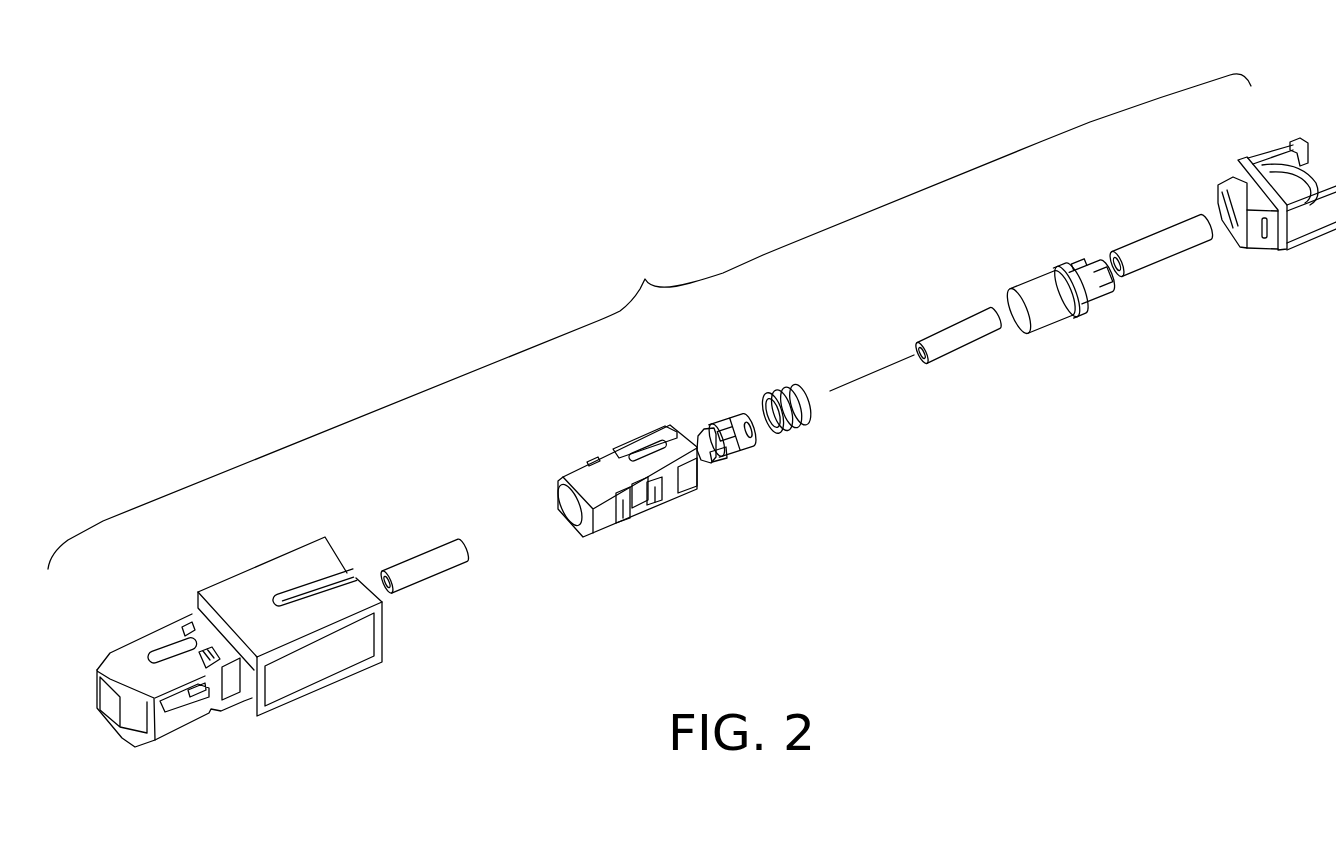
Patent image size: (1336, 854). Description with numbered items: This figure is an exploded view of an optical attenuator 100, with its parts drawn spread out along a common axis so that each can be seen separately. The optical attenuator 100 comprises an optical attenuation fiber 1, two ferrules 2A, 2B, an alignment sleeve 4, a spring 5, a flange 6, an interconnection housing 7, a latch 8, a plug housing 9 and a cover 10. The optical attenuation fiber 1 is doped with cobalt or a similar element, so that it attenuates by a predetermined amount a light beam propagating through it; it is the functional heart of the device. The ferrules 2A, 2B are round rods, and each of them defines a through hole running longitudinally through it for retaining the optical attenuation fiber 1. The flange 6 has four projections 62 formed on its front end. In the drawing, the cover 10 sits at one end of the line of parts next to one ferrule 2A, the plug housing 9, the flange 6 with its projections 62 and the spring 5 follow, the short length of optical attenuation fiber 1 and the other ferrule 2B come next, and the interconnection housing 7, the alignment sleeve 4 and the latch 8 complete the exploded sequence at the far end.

The optical attenuator 100 is at (649, 321).
The cover 10 is at (245, 565).
The ferrule 2A is at (440, 543).
The plug housing 9 is at (620, 437).
The flange 6 is at (733, 412).
The projections 62 is at (722, 460).
The spring 5 is at (788, 395).
The optical attenuation fiber 1 is at (866, 375).
The ferrule 2B is at (967, 313).
The interconnection housing 7 is at (1058, 258).
The alignment sleeve 4 is at (1182, 220).
The latch 8 is at (1285, 137).